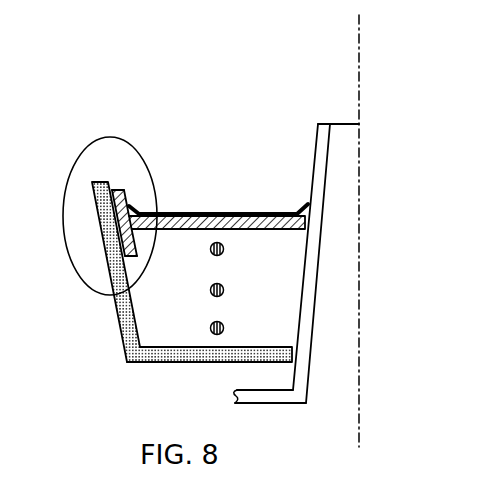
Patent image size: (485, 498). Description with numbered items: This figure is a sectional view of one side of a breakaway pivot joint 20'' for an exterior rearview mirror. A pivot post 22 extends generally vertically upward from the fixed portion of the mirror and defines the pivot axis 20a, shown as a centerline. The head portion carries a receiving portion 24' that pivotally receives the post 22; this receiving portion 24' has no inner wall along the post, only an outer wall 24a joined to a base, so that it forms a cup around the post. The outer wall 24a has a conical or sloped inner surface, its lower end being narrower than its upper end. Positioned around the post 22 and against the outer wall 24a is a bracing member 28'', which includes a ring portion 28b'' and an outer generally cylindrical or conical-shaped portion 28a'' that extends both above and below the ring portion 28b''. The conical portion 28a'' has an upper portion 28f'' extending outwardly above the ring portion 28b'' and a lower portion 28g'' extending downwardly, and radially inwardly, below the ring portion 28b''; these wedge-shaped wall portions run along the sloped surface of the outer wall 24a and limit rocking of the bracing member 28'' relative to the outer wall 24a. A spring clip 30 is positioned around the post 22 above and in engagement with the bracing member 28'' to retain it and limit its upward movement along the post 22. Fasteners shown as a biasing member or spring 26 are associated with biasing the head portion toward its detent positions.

The breakaway pivot joint 20'' is at (162, 72).
The pivot axis 20a is at (358, 40).
The pivot post 22 is at (294, 393).
The receiving portion 24' is at (187, 374).
The outer wall 24a is at (118, 320).
The biasing member or spring 26 is at (224, 293).
The bracing member 28'' is at (208, 212).
The conical-shaped portion 28a'' is at (187, 183).
The ring portion 28b'' is at (220, 246).
The upper portion 28f'' is at (148, 148).
The lower portion 28g'' is at (167, 287).
The spring clip 30 is at (238, 213).